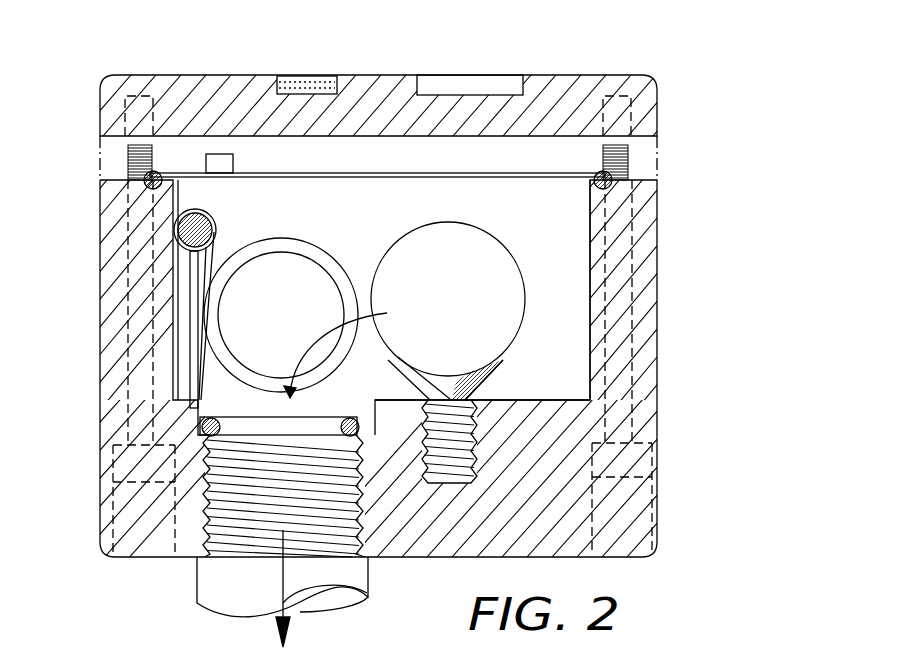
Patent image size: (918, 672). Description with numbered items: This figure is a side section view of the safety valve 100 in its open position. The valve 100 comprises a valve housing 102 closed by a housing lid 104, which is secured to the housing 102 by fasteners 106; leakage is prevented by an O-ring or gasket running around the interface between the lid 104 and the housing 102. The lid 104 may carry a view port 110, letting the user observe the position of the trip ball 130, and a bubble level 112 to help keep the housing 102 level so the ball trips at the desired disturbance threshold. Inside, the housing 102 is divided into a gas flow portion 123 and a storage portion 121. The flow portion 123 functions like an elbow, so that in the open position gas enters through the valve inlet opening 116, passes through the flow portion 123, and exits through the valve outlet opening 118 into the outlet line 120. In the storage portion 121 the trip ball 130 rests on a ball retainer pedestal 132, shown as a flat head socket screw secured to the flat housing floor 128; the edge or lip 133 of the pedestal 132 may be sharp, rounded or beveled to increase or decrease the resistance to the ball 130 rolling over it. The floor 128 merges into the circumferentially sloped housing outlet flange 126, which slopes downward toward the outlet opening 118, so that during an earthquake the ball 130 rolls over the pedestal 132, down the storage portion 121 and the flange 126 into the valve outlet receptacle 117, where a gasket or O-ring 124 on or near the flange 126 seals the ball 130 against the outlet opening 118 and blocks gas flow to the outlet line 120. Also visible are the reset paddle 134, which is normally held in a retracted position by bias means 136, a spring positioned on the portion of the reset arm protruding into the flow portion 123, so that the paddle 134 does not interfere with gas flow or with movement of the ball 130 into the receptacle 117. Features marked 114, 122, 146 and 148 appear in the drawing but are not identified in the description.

The valve 100 is at (672, 344).
The valve housing 102 is at (660, 265).
The housing lid 104 is at (612, 75).
The fasteners 106 is at (127, 163).
The view port 110 is at (473, 78).
The bubble level 112 is at (290, 77).
The hidden mounting bore 114 is at (120, 185).
The valve inlet opening 116 is at (278, 268).
The valve outlet receptacle 117 is at (253, 420).
The valve outlet opening 118 is at (297, 465).
The outlet line 120 is at (228, 605).
The storage portion 121 is at (543, 195).
The bore outlet 122 is at (200, 563).
The gas flow portion 123 is at (218, 188).
The gasket or O-ring 124 is at (202, 428).
The circumferentially sloped housing outlet flange 126 is at (387, 400).
The flat housing floor 128 is at (537, 400).
The trip ball 130 is at (487, 252).
The ball retainer pedestal 132 is at (470, 378).
The edge or lip of the retainer pedestal 133 is at (500, 360).
The reset paddle 134 is at (222, 340).
The bias means 136 is at (188, 292).
The side wall 146 is at (613, 305).
The contact edge 148 is at (403, 363).